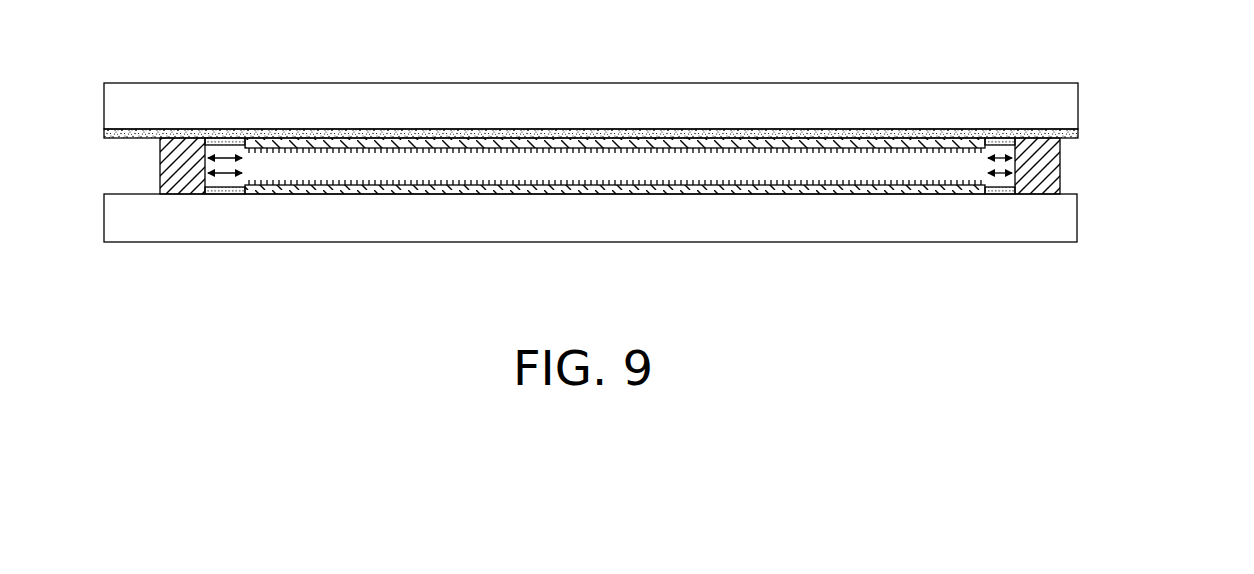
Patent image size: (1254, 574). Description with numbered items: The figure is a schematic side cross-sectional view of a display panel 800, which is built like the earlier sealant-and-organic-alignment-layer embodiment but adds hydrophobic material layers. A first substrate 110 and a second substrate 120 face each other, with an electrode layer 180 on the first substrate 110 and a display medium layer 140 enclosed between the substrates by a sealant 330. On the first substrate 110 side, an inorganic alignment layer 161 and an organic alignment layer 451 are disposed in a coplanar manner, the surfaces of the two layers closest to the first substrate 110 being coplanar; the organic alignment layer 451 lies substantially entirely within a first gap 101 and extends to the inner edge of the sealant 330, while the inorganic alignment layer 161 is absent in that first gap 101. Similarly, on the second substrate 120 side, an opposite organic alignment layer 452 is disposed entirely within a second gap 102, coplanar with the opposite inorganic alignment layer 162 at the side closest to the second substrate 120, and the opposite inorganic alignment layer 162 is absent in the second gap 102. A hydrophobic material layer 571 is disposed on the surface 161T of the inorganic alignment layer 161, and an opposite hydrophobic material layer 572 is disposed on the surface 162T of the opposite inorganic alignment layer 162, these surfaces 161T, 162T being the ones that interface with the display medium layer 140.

The first substrate 110 is at (1063, 98).
The electrode layer 180 is at (1078, 133).
The second substrate 120 is at (1065, 212).
The sealant 330 is at (168, 194).
The organic alignment layer 451 is at (180, 194).
The opposite organic alignment layer 452 is at (212, 194).
The first gap 101 is at (224, 183).
The second gap 102 is at (228, 194).
The display medium layer 140 is at (773, 168).
The inorganic alignment layer 161 is at (865, 143).
The surface of the inorganic alignment layer 161T is at (628, 154).
The opposite inorganic alignment layer 162 is at (915, 190).
The surface of the opposite inorganic alignment layer 162T is at (543, 191).
The hydrophobic material layer 571 is at (435, 150).
The opposite hydrophobic material layer 572 is at (415, 183).
The display panel 800 is at (1243, 322).